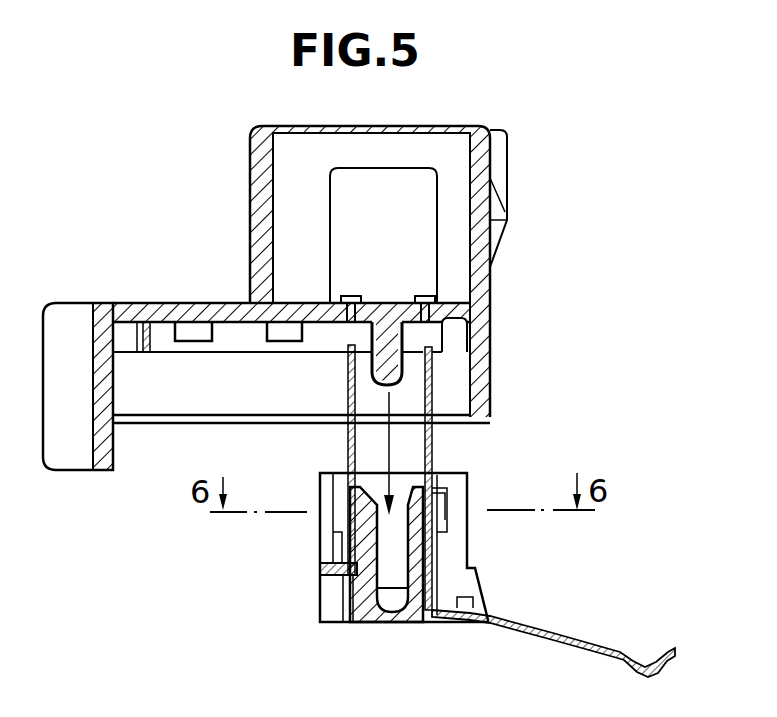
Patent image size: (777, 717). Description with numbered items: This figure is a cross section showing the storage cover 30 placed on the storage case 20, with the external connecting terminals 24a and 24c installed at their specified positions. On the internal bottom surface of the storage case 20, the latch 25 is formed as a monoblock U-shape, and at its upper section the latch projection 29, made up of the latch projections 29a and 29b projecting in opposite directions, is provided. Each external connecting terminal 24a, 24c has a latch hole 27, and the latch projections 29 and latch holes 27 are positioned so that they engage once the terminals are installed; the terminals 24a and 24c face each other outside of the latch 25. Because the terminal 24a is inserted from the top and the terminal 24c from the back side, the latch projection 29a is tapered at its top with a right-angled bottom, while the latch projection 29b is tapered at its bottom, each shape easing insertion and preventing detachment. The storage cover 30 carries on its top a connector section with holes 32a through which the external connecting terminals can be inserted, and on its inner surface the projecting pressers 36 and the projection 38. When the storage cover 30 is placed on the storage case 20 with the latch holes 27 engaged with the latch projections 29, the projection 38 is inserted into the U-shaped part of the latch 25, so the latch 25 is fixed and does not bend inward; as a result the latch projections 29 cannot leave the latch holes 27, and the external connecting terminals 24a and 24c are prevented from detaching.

The storage cover 30 is at (452, 126).
The holes 32a is at (347, 300).
The projection 38 is at (403, 377).
The projecting pressers 36 is at (280, 342).
The external connecting terminal 24a is at (348, 452).
The external connecting terminal 24c is at (432, 440).
The latch projection 29 is at (340, 592).
The latch projection 29a is at (365, 577).
The latch projection 29b is at (440, 505).
The latch hole 27 is at (358, 488).
The latch 25 is at (391, 612).
The storage case 20 is at (466, 622).